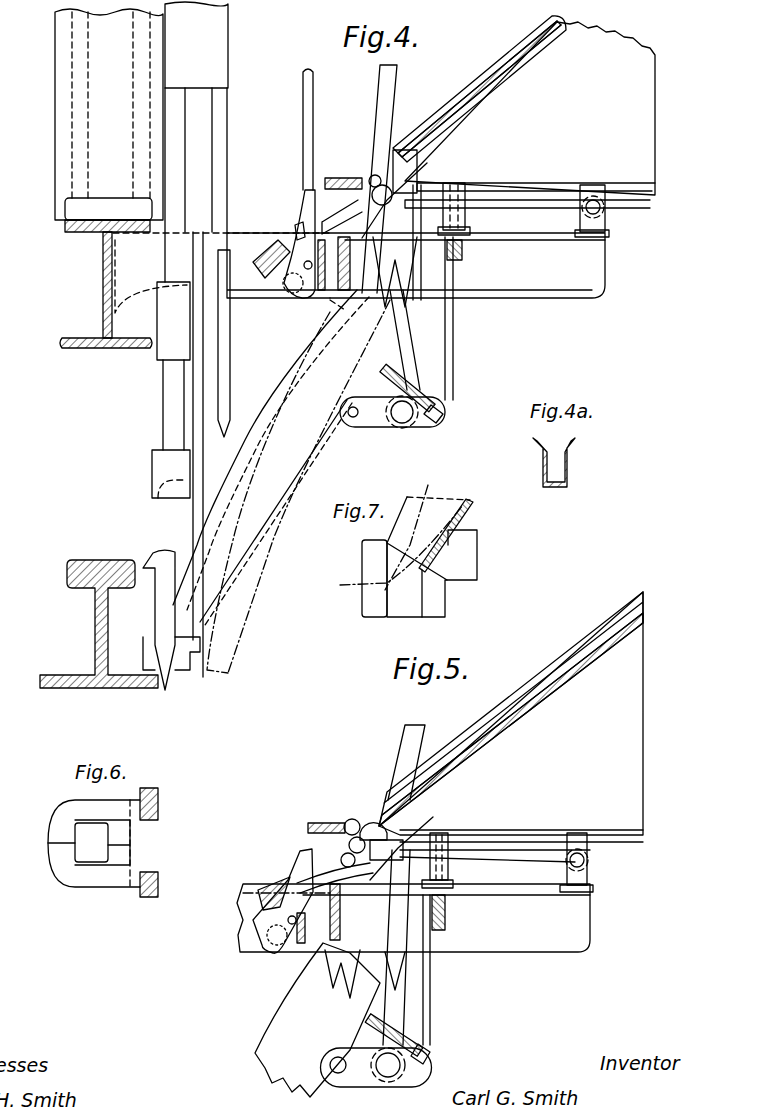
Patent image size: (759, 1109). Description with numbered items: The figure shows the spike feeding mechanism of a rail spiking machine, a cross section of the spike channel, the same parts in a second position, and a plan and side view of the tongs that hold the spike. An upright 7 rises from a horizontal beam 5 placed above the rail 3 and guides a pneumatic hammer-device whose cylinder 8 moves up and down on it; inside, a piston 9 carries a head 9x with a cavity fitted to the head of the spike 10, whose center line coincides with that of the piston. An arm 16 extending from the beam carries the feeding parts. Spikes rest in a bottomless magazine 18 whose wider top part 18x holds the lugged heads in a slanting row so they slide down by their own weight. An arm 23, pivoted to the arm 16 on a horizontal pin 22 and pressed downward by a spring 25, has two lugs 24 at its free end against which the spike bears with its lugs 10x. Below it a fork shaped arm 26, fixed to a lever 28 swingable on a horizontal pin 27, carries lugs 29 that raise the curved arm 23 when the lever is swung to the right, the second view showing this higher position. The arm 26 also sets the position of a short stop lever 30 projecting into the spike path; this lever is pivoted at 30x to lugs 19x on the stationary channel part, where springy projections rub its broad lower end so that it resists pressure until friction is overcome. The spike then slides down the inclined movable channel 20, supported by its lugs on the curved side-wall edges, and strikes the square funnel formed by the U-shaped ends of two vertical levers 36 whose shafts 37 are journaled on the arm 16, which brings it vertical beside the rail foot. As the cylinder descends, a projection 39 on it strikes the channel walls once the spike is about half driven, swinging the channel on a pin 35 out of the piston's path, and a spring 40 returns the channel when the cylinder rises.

In FIG. 4, the rail 3 is at (100, 560).
In FIG. 4, the horizontal beam 5 is at (104, 294).
In FIG. 4, the upright 7 is at (109, 120).
In FIG. 4, the cylinder 8 is at (196, 142).
In FIG. 4, the piston 9 is at (172, 383).
In FIG. 4, the head 9x is at (162, 472).
In FIG. 4, the spike 10 is at (157, 599).
In FIG. 7, the spike 10 is at (396, 561).
In FIG. 4, the lugs 10x is at (340, 213).
In FIG. 5, the lugs 10x is at (312, 858).
In FIG. 4, the arm 16 is at (416, 265).
In FIG. 5, the arm 16 is at (413, 918).
In FIG. 4, the magazine 18 is at (530, 108).
In FIG. 5, the magazine 18 is at (511, 713).
In FIG. 4, the top part of the casing 18x is at (498, 75).
In FIG. 5, the top part of the casing 18x is at (578, 650).
In FIG. 4, the lugs 19x is at (324, 315).
In FIG. 5, the lugs 19x is at (302, 951).
In FIG. 4, the channel 20 is at (291, 408).
In FIG. 4A, the channel 20 is at (533, 440).
In FIG. 7, the channel 20 is at (472, 510).
In FIG. 5, the channel 20 is at (317, 1020).
In FIG. 4, the horizontal pin 22 is at (606, 213).
In FIG. 5, the horizontal pin 22 is at (590, 868).
In FIG. 4, the arm 23 is at (340, 177).
In FIG. 5, the arm 23 is at (318, 823).
In FIG. 4, the lugs 24 is at (368, 185).
In FIG. 5, the lugs 24 is at (350, 825).
In FIG. 4, the spring 25 is at (460, 262).
In FIG. 5, the spring 25 is at (446, 914).
In FIG. 4, the fork shaped arm 26 is at (293, 240).
In FIG. 5, the fork shaped arm 26 is at (275, 893).
In FIG. 4, the horizontal pin 27 is at (410, 420).
In FIG. 5, the horizontal pin 27 is at (390, 1078).
In FIG. 4, the lever 28 is at (392, 101).
In FIG. 5, the lever 28 is at (403, 758).
In FIG. 4, the lugs 29 is at (430, 171).
In FIG. 5, the lugs 29 is at (413, 841).
In FIG. 4, the lever 30 is at (302, 200).
In FIG. 5, the lever 30 is at (300, 866).
In FIG. 4, the pivot 30x is at (291, 296).
In FIG. 4, the pin 35 is at (355, 418).
In FIG. 5, the pin 35 is at (338, 1074).
In FIG. 4, the vertical levers 36 is at (311, 105).
In FIG. 7, the vertical levers 36 is at (368, 560).
In FIG. 6, the vertical levers 36 is at (92, 796).
In FIG. 4, the shafts 37 is at (243, 257).
In FIG. 4, the projection 39 is at (230, 323).
In FIG. 4, the spring 40 is at (430, 377).
In FIG. 7, the spring 40 is at (414, 526).
In FIG. 5, the spring 40 is at (422, 1040).